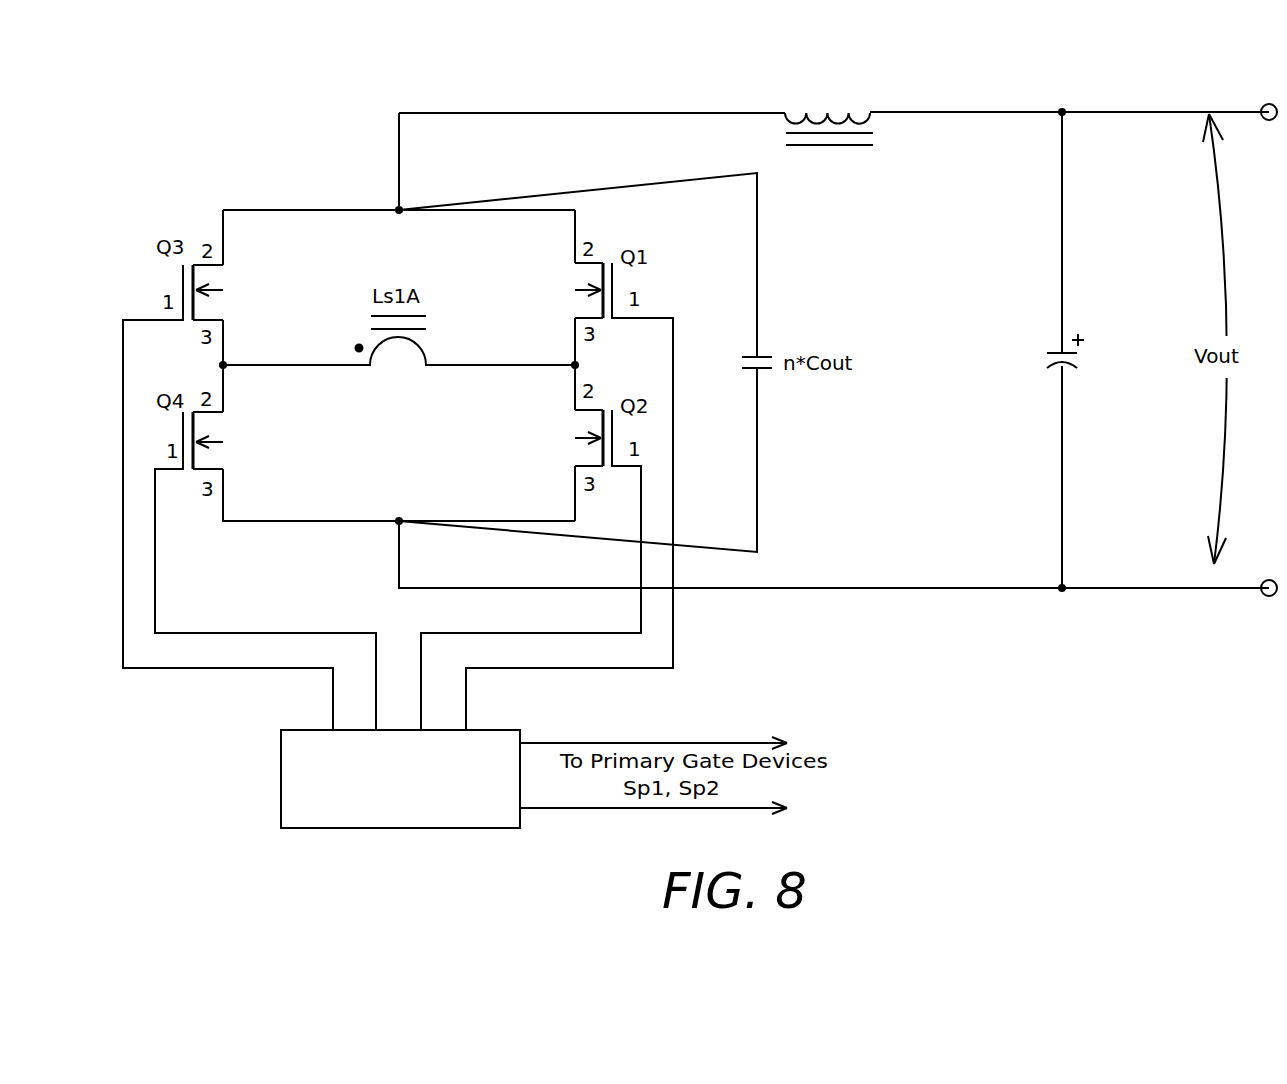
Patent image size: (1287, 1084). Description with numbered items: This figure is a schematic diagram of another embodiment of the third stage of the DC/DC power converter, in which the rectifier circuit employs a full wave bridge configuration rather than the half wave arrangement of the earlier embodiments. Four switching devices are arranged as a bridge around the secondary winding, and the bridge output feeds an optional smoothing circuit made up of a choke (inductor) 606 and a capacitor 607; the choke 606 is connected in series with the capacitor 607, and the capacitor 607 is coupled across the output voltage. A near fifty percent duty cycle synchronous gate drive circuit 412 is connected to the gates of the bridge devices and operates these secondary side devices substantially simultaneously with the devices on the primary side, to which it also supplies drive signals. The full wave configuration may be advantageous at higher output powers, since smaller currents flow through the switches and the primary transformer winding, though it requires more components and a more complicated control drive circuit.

The choke (inductor) 606 is at (826, 145).
The capacitor 607 is at (1052, 352).
The synchronous gate drive circuit 412 is at (497, 729).